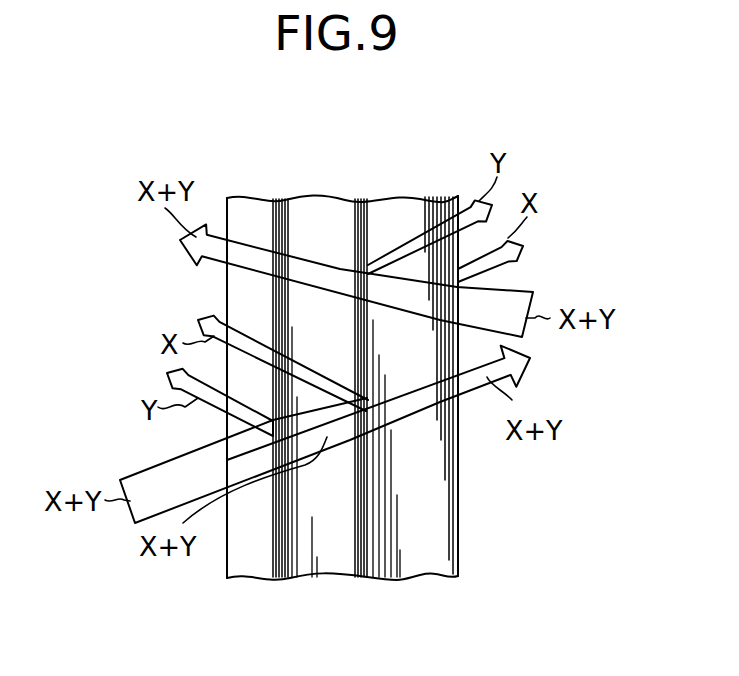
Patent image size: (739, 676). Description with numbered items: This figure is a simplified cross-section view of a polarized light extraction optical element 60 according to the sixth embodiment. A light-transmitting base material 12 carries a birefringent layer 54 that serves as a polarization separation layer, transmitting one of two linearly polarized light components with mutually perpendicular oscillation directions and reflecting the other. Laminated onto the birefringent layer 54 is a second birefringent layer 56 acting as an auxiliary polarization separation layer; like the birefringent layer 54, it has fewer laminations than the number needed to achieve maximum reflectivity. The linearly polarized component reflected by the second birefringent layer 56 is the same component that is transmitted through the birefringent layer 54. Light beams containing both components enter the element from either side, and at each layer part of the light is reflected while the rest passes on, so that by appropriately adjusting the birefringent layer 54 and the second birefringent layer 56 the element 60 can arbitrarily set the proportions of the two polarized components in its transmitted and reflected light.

The polarized light extraction optical element 60 is at (379, 176).
The light-transmitting base material 12 is at (236, 564).
The birefringent layer 54 is at (367, 598).
The second birefringent layer 56 is at (458, 598).